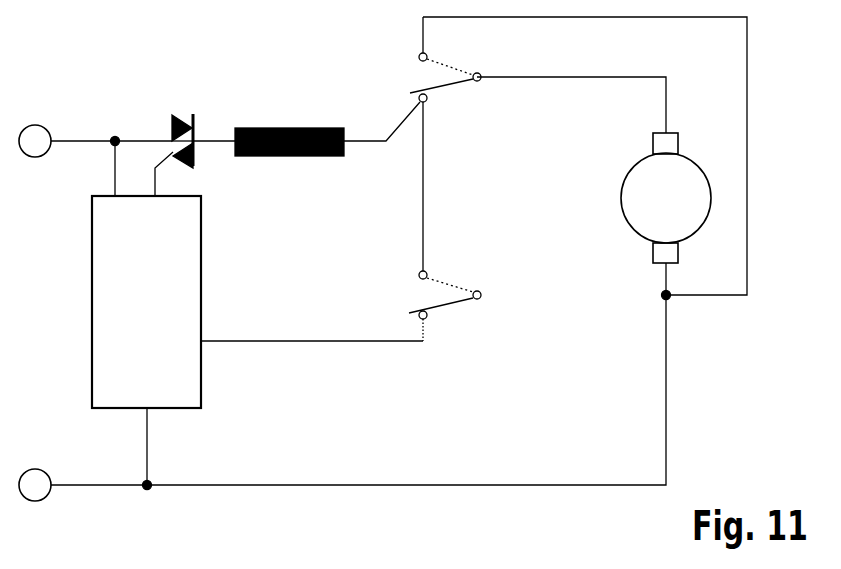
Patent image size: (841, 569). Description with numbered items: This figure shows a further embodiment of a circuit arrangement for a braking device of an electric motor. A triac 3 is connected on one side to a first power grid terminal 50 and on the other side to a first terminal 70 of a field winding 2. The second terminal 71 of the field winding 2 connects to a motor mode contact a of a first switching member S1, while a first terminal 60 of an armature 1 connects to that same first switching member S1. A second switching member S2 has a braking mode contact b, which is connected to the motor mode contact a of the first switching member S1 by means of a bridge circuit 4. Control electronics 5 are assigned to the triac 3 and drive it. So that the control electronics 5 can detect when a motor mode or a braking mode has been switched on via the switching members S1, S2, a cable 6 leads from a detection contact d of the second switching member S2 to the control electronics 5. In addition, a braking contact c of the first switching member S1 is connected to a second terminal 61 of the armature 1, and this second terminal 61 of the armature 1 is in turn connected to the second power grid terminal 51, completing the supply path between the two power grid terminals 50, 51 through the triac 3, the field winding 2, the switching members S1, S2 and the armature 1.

The armature 1 is at (621, 199).
The field winding 2 is at (291, 128).
The triac 3 is at (187, 113).
The bridge circuit 4 is at (425, 190).
The control electronics 5 is at (90, 302).
The cable 6 is at (312, 340).
The first power grid terminal 50 is at (35, 125).
The second power grid terminal 51 is at (35, 469).
The first terminal of the armature 60 is at (668, 107).
The second terminal of the armature 61 is at (668, 278).
The first terminal of the field winding 70 is at (215, 140).
The second terminal of the field winding 71 is at (366, 140).
The first switching member S1 is at (480, 82).
The second switching member S2 is at (480, 300).
The motor mode contact a is at (428, 102).
The braking mode contact b is at (420, 271).
The braking contact c is at (420, 53).
The detection contact d is at (428, 318).